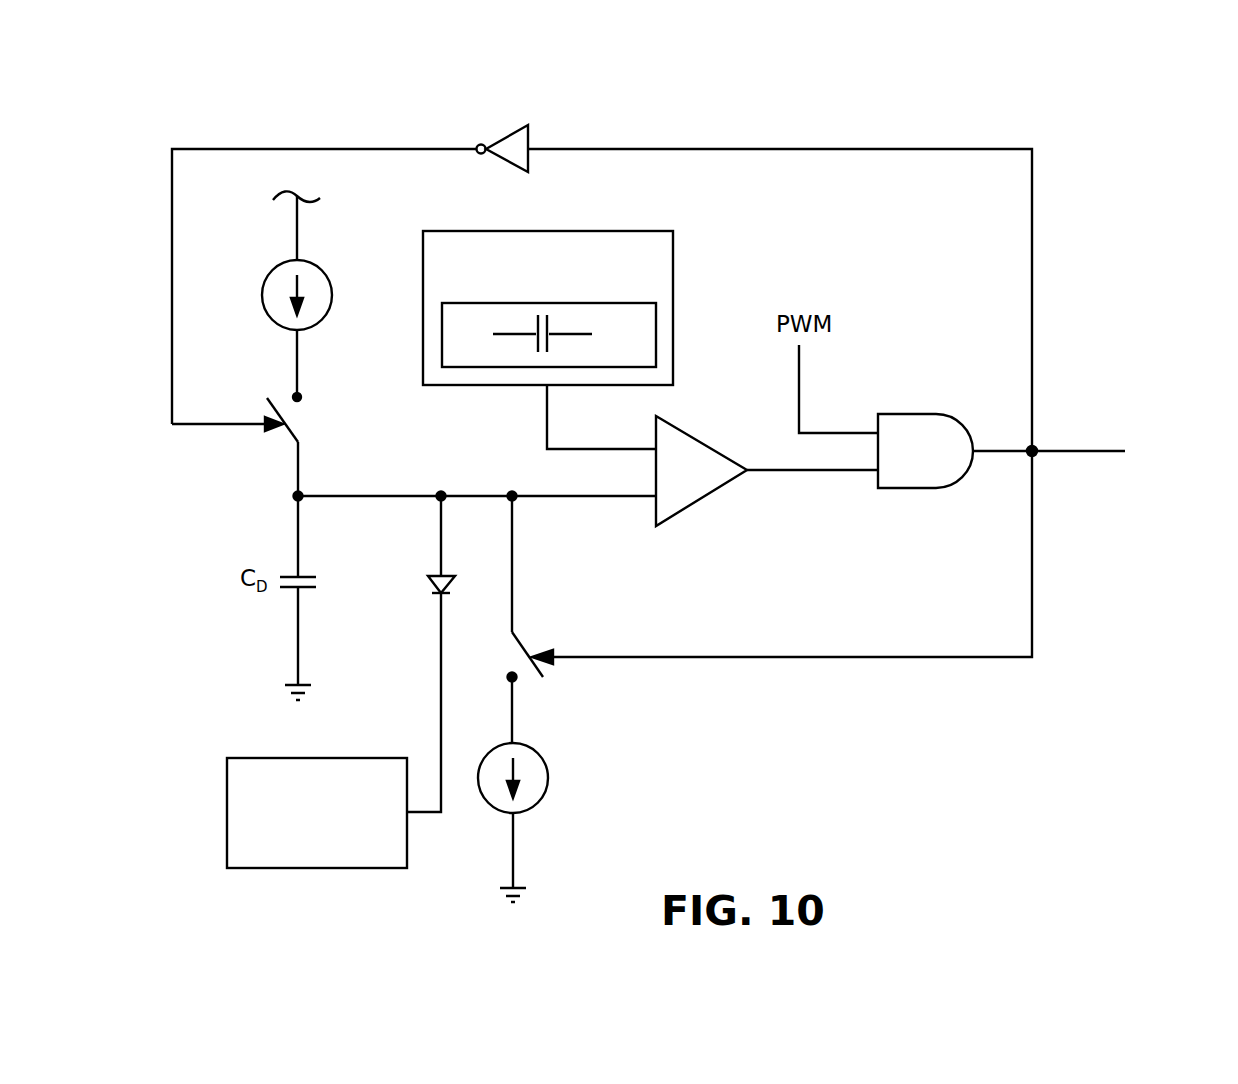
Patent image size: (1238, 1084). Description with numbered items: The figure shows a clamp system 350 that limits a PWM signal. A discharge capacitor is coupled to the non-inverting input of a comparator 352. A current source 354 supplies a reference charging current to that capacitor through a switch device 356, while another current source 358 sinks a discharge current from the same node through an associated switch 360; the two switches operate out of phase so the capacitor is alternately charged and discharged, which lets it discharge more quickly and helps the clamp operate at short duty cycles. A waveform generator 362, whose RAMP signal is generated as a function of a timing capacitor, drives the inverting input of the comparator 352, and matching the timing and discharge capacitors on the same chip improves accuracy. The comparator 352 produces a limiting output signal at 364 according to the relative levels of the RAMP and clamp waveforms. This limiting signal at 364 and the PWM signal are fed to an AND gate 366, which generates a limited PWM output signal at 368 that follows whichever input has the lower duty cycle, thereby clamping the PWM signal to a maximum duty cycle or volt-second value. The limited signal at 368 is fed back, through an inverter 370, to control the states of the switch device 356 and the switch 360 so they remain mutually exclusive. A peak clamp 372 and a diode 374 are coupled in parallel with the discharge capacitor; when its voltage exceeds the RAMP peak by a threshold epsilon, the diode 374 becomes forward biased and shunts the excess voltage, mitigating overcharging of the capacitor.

The clamp system 350 is at (1095, 126).
The comparator 352 is at (710, 497).
The current source 354 is at (320, 270).
The switch device 356 is at (303, 424).
The current source 358 is at (538, 750).
The switch 360 is at (530, 638).
The waveform generator 362 is at (673, 262).
The limiting output signal 364 is at (793, 470).
The AND gate 366 is at (910, 488).
The limited PWM output signal 368 is at (1057, 451).
The inverter 370 is at (536, 130).
The peak clamp 372 is at (303, 758).
The diode 374 is at (428, 570).